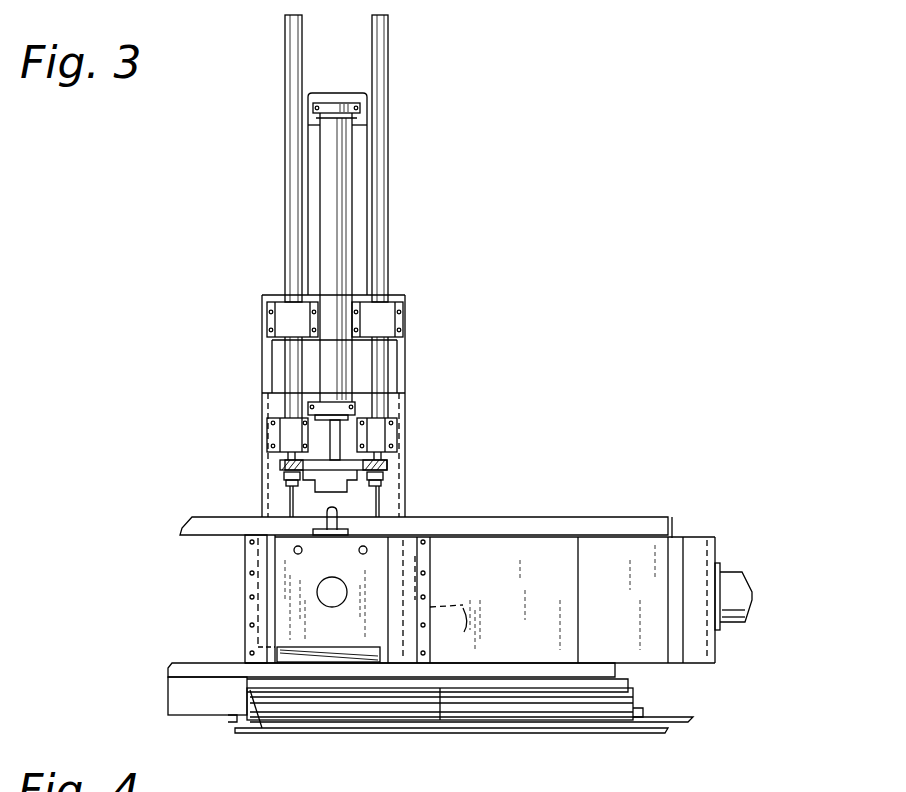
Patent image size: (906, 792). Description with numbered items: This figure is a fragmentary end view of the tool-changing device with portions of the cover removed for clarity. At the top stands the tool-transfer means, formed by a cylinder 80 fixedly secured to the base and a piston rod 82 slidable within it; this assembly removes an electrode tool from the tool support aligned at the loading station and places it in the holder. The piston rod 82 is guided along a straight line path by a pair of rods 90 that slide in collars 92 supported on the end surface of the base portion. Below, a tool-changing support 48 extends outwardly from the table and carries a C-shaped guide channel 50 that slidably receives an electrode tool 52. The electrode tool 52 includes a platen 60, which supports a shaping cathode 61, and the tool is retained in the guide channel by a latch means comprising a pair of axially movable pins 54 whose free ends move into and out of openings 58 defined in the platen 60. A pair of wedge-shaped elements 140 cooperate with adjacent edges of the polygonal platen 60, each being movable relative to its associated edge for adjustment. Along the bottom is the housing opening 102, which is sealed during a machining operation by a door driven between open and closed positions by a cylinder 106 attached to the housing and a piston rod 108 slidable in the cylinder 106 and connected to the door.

The tool-changing support 48 is at (240, 600).
The C-shaped guide channel 50 is at (252, 554).
The electrode tool 52 is at (288, 554).
The pins 54 is at (366, 553).
The openings 58 is at (302, 550).
The platen 60 is at (335, 634).
The shaping cathode 61 is at (342, 604).
The cylinder 80 is at (332, 221).
The piston rod 82 is at (330, 430).
The rods 90 is at (293, 175).
The collars 92 is at (287, 440).
The opening 102 is at (317, 734).
The cylinder 106 is at (617, 694).
The piston rod 108 is at (230, 685).
The wedge-shaped elements 140 is at (380, 656).